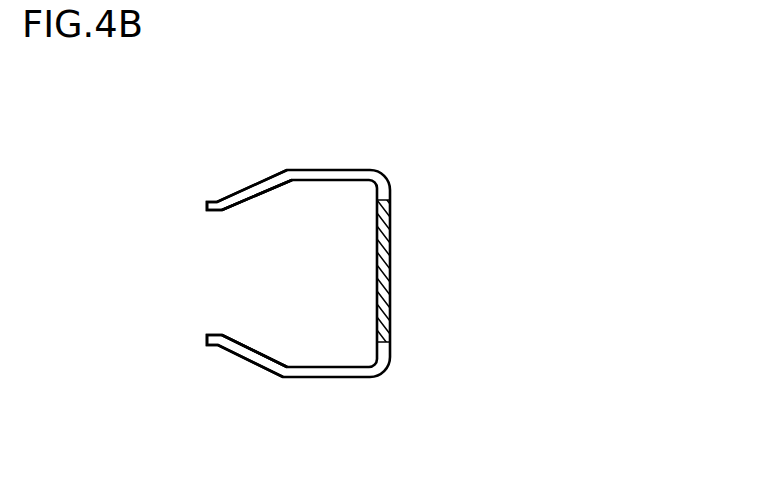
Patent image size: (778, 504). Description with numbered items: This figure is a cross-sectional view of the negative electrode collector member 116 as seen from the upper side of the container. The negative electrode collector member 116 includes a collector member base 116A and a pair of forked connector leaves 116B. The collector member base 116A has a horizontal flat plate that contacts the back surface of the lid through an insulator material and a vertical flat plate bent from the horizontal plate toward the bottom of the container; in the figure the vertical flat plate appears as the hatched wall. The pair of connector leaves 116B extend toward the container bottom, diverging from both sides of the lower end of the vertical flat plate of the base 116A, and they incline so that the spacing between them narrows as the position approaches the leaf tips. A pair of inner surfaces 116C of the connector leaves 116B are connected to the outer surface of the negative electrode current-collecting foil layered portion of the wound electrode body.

The negative electrode collector member 116 is at (424, 167).
The collector member base 116A is at (390, 248).
The forked connector leaves 116B is at (256, 185).
The inner surfaces 116C is at (250, 199).